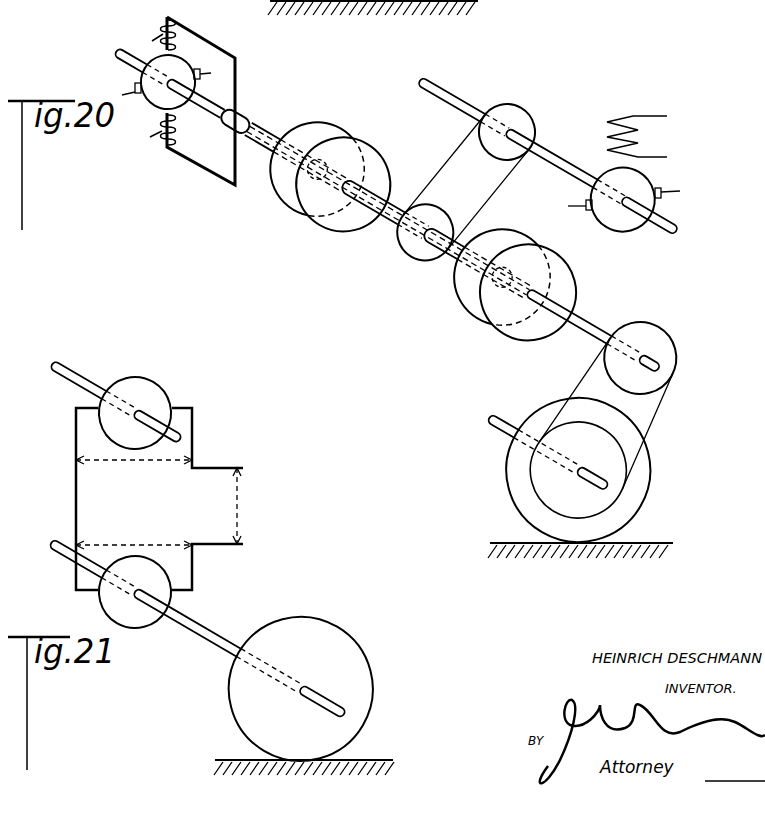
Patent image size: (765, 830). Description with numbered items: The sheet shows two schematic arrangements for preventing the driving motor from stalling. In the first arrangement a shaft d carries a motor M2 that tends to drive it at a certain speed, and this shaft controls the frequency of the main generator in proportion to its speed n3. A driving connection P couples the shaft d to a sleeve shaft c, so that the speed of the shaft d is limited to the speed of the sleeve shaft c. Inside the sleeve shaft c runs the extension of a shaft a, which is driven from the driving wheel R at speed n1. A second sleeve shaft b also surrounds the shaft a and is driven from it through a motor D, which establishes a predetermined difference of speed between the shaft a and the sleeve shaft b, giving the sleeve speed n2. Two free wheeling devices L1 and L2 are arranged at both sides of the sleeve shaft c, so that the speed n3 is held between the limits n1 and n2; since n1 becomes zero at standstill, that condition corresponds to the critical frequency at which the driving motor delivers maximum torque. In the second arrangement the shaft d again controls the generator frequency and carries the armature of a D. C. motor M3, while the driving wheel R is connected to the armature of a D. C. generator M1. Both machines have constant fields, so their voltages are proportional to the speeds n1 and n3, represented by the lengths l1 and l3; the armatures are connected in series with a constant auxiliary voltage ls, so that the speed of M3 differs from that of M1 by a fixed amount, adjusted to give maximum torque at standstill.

In FIG. 20, the shaft a is at (118, 60).
In FIG. 20, the sleeve shaft b is at (246, 102).
In FIG. 20, the sleeve shaft c is at (348, 200).
In FIG. 20, the shaft d is at (433, 83).
In FIG. 21, the shaft d is at (62, 357).
In FIG. 20, the motor D is at (166, 64).
In FIG. 20, the free wheeling device L1 is at (514, 285).
In FIG. 20, the free wheeling device L2 is at (330, 178).
In FIG. 21, the D. C. generator M1 is at (145, 598).
In FIG. 20, the motor M2 is at (653, 180).
In FIG. 21, the D. C. motor M3 is at (143, 413).
In FIG. 20, the speed n1 is at (568, 350).
In FIG. 21, the speed n1 is at (170, 630).
In FIG. 20, the speed n2 is at (240, 157).
In FIG. 20, the speed n3 is at (363, 225).
In FIG. 21, the speed n3 is at (67, 398).
In FIG. 20, the driving connection P is at (486, 199).
In FIG. 20, the driving wheel R is at (580, 436).
In FIG. 21, the driving wheel R is at (300, 688).
In FIG. 21, the distance l1 is at (134, 544).
In FIG. 21, the distance l3 is at (134, 461).
In FIG. 21, the constant voltage ls is at (238, 506).